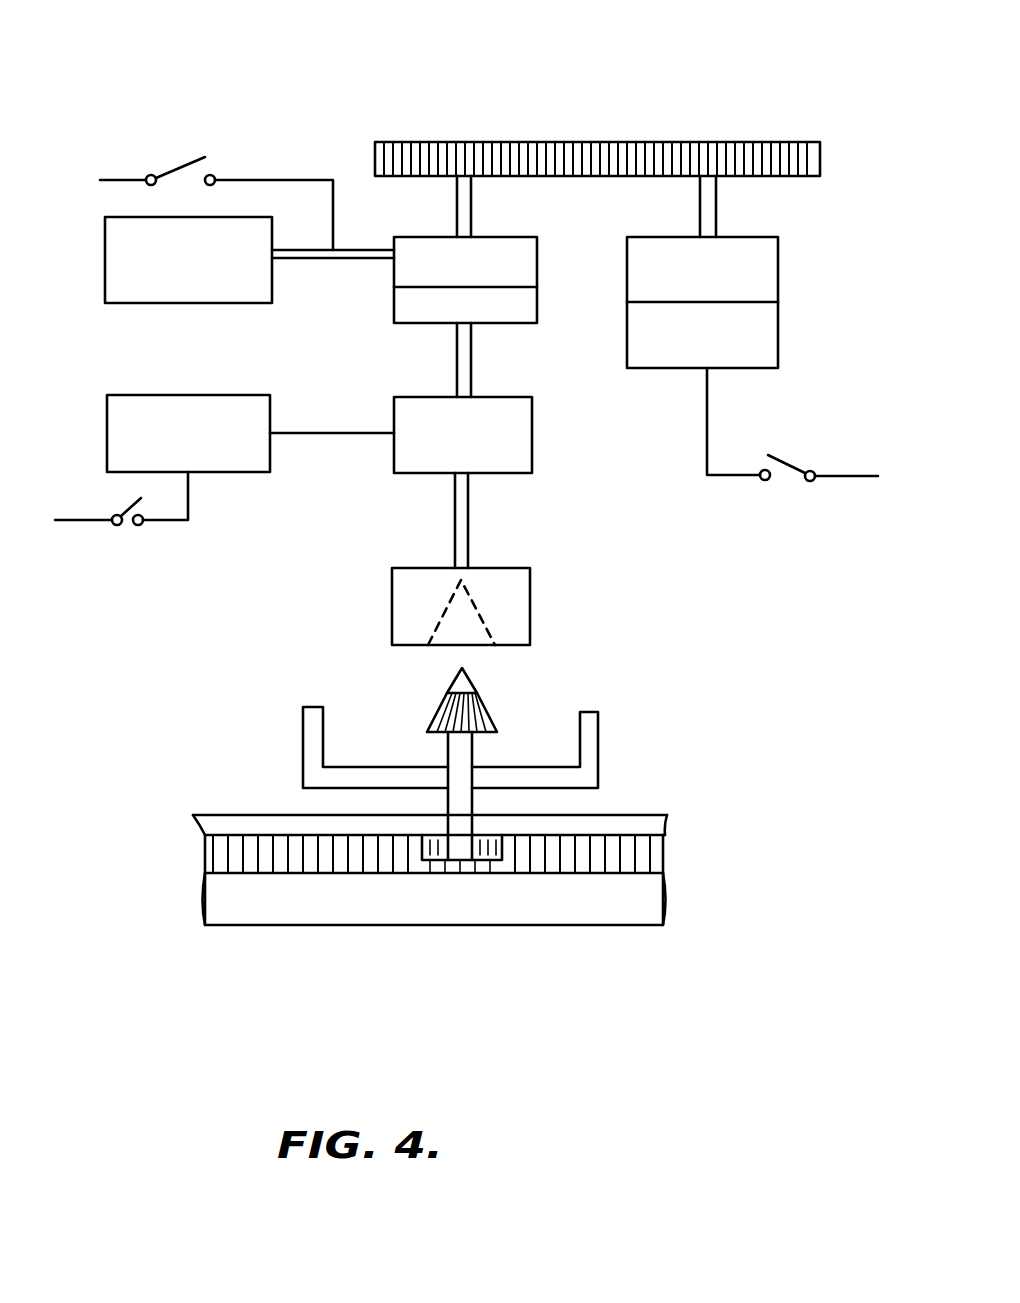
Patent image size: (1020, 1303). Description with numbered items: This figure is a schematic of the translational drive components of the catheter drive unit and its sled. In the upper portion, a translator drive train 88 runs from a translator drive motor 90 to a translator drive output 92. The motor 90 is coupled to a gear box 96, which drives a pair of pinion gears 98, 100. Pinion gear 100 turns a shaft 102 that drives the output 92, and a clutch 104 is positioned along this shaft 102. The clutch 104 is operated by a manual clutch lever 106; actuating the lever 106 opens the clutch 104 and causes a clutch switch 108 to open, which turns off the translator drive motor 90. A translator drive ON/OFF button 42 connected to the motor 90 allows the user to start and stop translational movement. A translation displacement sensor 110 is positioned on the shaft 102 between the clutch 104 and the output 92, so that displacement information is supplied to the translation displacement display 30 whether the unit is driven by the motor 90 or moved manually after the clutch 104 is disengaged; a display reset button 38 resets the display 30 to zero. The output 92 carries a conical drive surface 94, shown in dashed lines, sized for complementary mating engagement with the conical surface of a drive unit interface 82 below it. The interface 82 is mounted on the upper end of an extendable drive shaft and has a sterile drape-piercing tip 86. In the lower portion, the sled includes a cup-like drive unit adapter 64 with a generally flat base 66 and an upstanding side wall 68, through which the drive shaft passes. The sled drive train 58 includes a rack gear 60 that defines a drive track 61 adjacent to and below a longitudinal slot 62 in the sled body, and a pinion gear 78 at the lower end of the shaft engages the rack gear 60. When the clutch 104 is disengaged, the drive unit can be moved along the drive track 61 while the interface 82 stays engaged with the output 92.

The translator drive train 88 is at (842, 46).
The pinion gear 100 is at (417, 152).
The pinion gear 98 is at (777, 150).
The clutch 104 is at (500, 242).
The shaft 102 is at (472, 364).
The translation displacement sensor 110 is at (522, 406).
The translator drive output 92 is at (530, 586).
The conical drive surface 94 is at (437, 626).
The gear box 96 is at (770, 240).
The translator drive motor 90 is at (772, 327).
The translator drive ON/OFF button 42 is at (787, 462).
The manual clutch lever 106 is at (105, 240).
The clutch switch 108 is at (183, 168).
The translation displacement display 30 is at (121, 393).
The display reset button 38 is at (130, 530).
The sled drive train 58 is at (732, 757).
The sterile drape-piercing tip 86 is at (468, 672).
The drive unit interface 82 is at (486, 714).
The drive unit adapter 64 is at (293, 735).
The base 66 is at (382, 765).
The side wall 68 is at (598, 712).
The longitudinal slot 62 is at (620, 815).
The rack gear 60 is at (633, 855).
The pinion gear 78 is at (453, 853).
The drive track 61 is at (552, 890).